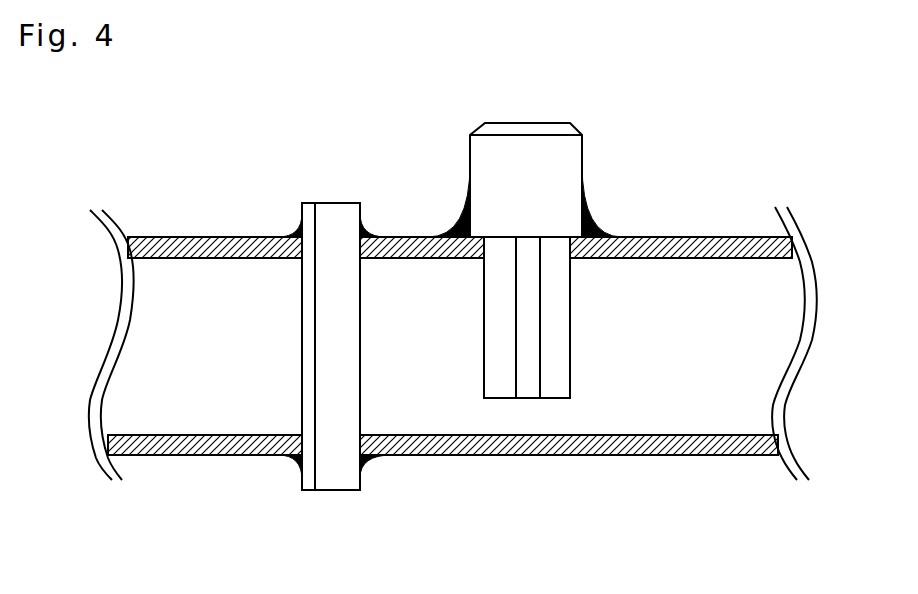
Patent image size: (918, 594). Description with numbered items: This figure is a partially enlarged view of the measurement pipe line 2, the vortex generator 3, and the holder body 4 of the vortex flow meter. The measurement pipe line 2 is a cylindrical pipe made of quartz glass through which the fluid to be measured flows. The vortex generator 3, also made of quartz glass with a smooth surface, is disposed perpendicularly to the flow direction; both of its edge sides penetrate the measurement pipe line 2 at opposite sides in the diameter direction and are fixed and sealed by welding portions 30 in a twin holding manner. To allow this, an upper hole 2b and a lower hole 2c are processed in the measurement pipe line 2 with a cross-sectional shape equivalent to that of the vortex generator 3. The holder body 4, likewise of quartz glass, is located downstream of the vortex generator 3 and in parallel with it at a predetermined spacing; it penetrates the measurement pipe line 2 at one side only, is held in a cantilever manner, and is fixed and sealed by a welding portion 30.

The measurement pipe line 2 is at (228, 258).
The upper hole 2b is at (357, 247).
The lower hole 2c is at (362, 437).
The vortex generator 3 is at (320, 362).
The holder body 4 is at (560, 312).
The welding portion 30 is at (292, 234).